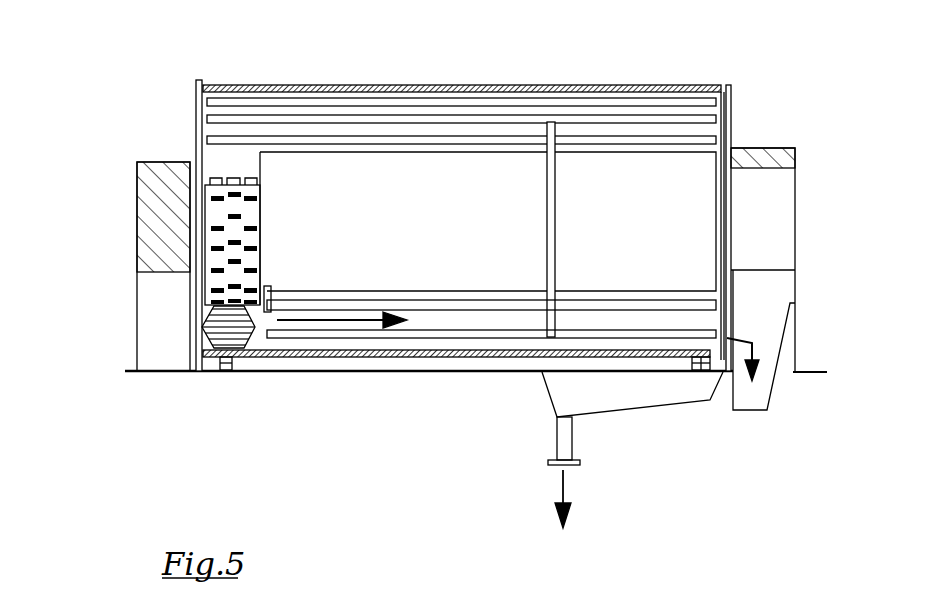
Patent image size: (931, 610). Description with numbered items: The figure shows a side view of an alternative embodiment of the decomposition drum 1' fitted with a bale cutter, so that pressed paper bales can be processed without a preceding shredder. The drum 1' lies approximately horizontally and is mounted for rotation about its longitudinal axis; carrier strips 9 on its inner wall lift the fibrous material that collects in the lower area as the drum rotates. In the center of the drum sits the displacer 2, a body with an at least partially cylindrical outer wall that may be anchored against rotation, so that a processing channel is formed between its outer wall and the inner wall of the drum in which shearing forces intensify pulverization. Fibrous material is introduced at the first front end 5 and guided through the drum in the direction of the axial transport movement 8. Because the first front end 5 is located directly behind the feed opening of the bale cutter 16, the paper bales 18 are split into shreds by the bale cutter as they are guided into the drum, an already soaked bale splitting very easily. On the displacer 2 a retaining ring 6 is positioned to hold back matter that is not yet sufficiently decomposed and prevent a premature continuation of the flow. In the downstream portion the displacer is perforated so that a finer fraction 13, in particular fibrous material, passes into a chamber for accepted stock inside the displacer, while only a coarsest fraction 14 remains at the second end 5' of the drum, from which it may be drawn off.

The housing 1' is at (463, 195).
The displacer 2 is at (420, 234).
The first front end 5 is at (132, 185).
The second end 5' is at (790, 208).
The retaining ring 6 is at (548, 127).
The axial transport movement 8 is at (360, 335).
The carrier strips 9 is at (487, 312).
The finer fraction 13 is at (570, 510).
The coarsest fraction 14 is at (755, 372).
The bale cutter 16 is at (222, 185).
The paper bales 18 is at (223, 338).